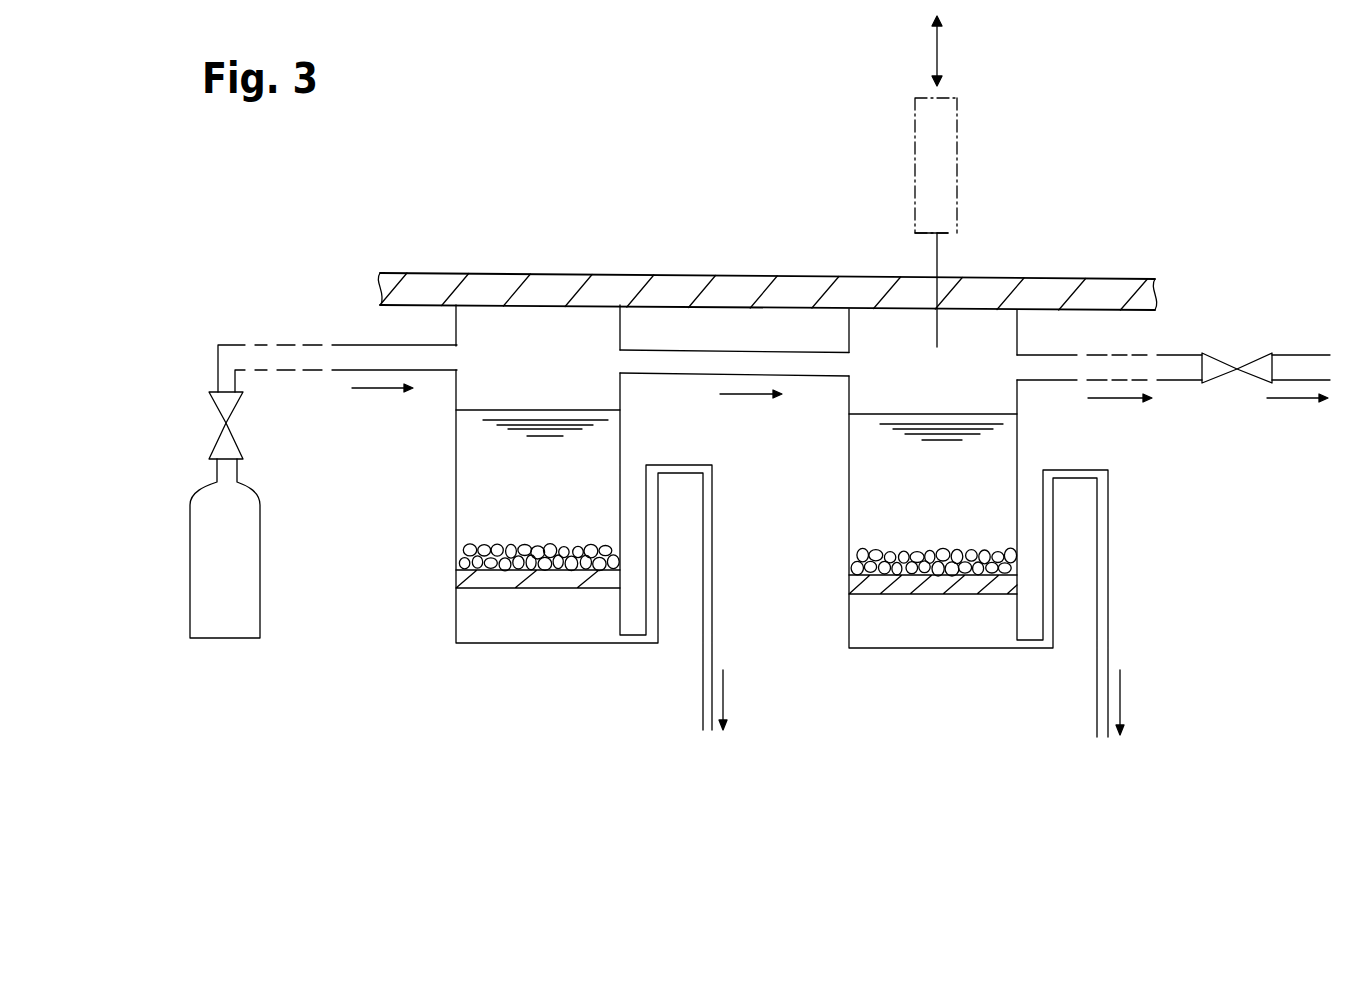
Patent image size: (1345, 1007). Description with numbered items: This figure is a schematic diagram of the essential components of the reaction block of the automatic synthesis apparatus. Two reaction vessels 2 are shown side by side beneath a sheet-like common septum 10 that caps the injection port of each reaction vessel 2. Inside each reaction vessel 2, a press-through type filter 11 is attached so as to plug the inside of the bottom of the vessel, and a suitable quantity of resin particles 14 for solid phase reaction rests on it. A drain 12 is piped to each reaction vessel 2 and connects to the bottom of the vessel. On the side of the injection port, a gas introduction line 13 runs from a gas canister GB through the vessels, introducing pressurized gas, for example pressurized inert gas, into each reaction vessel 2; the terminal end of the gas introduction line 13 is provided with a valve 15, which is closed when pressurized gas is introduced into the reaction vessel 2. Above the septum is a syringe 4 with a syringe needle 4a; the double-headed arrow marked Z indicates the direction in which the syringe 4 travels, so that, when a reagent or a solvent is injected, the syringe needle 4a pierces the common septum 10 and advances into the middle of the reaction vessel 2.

The reaction vessel 2 is at (603, 644).
The syringe 4 is at (957, 145).
The syringe needle 4a is at (937, 258).
The common septum 10 is at (775, 276).
The press-through type filter 11 is at (470, 580).
The drain 12 is at (712, 630).
The gas introduction line 13 is at (433, 375).
The resin particles 14 is at (476, 534).
The valve 15 is at (1238, 380).
The gas canister GB is at (260, 556).
The vertical direction Z is at (937, 55).